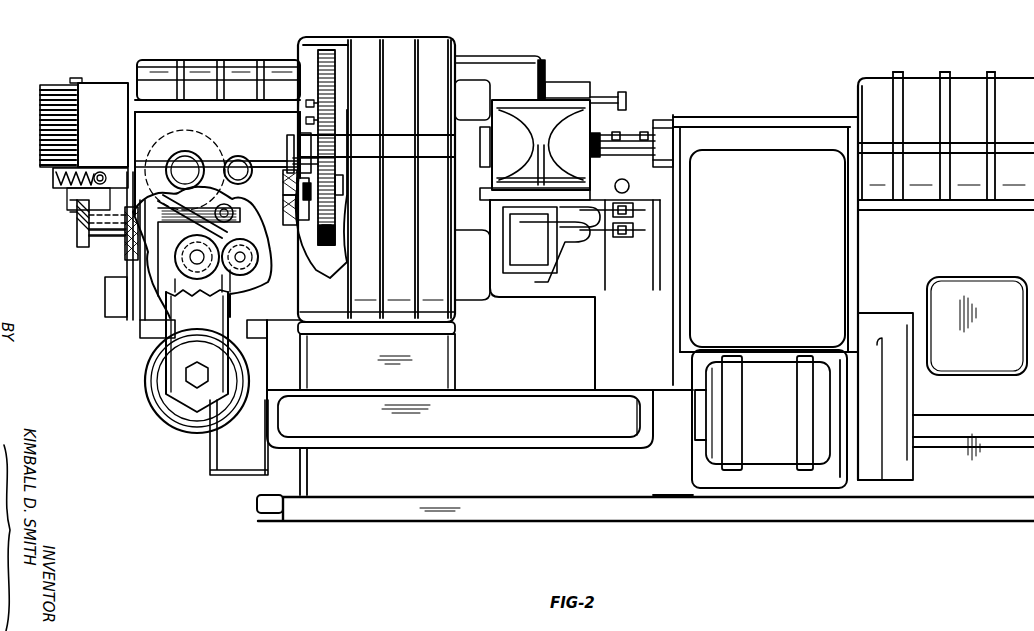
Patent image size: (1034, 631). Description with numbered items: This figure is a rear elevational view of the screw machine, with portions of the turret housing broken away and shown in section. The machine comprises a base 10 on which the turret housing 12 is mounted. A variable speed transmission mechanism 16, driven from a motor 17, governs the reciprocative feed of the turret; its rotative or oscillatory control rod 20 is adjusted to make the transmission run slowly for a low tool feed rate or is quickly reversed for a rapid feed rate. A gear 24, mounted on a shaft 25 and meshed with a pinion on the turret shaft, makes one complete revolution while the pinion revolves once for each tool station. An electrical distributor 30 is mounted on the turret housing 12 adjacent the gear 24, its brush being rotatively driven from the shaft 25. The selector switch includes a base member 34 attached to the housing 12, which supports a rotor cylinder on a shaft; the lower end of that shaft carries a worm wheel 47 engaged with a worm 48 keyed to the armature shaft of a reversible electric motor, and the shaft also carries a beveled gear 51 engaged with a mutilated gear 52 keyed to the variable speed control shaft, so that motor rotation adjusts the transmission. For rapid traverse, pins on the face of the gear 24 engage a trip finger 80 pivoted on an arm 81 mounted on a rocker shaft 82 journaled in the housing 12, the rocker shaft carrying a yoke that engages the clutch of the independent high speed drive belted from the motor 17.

The base 10 is at (607, 512).
The turret housing 12 is at (236, 63).
The variable speed transmission mechanism 16 is at (165, 272).
The motor 17 is at (162, 376).
The control rod 20 is at (141, 212).
The gear 24 is at (327, 50).
The shaft 25 is at (303, 140).
The electrical distributor 30 is at (292, 147).
The base member 34 is at (98, 95).
The worm wheel 47 is at (55, 176).
The worm 48 is at (96, 168).
The beveled gear 51 is at (70, 212).
The mutilated gear 52 is at (82, 226).
The trip finger 80 is at (337, 192).
The arm 81 is at (291, 172).
The rocker shaft 82 is at (293, 202).